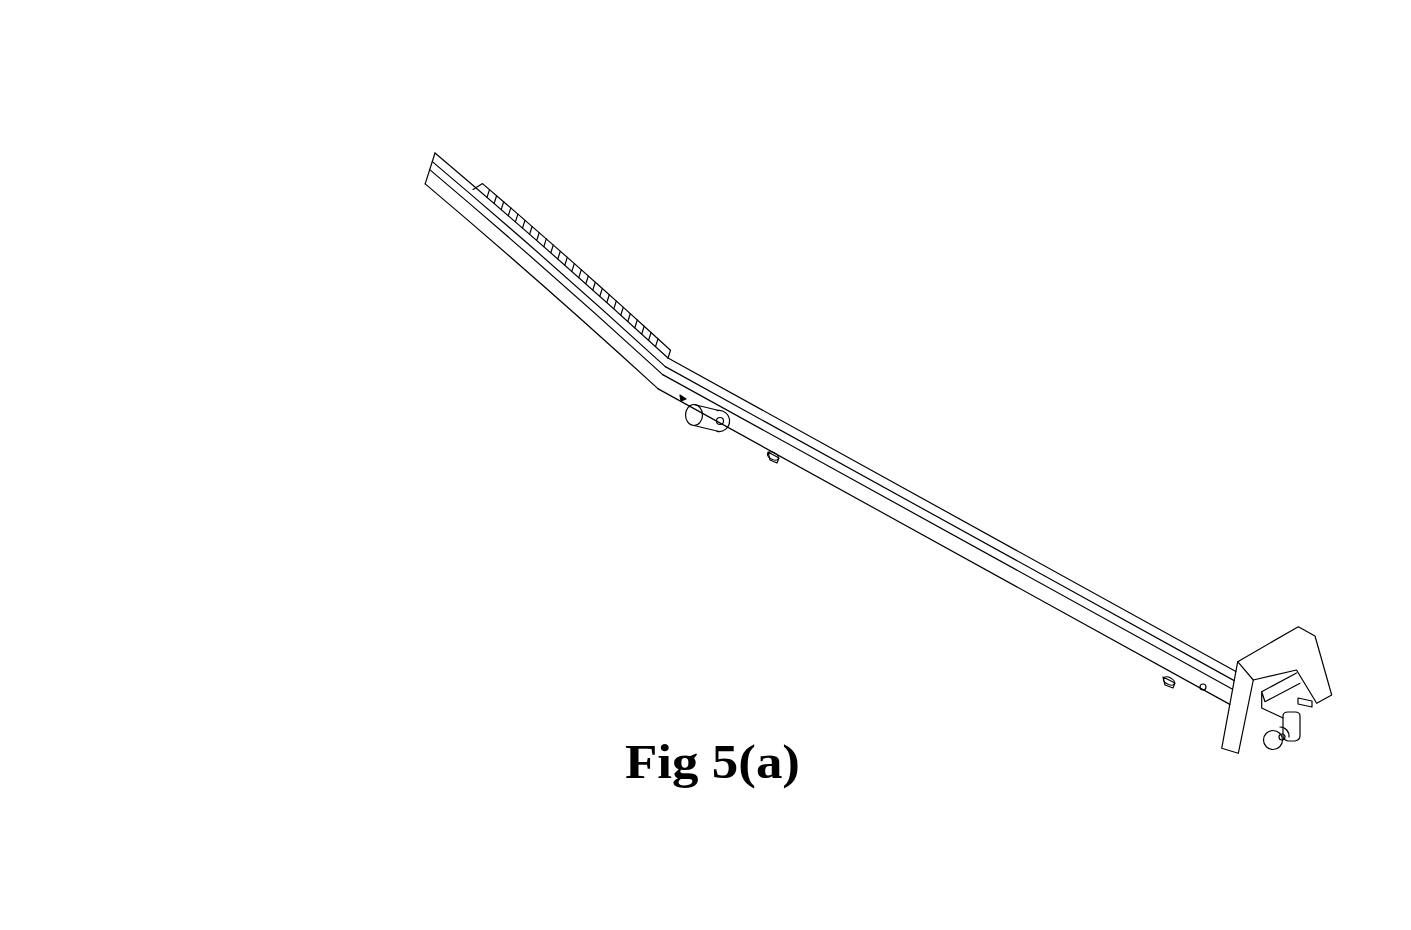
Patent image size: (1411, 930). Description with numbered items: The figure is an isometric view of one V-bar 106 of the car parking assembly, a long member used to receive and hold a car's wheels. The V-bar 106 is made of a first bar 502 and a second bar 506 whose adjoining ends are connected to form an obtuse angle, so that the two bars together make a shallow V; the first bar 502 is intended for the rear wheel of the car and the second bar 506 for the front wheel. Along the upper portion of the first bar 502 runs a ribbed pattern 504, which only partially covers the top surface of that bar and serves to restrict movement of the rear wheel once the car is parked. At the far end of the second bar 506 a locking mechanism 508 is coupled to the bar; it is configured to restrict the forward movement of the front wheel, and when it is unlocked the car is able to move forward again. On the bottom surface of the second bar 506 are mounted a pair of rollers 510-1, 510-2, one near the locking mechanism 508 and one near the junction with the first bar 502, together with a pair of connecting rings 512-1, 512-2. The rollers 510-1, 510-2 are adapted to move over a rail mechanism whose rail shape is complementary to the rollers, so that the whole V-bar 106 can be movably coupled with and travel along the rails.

The V-bar 106 is at (287, 119).
The first bar 502 is at (446, 143).
The ribbed pattern 504 is at (523, 210).
The second bar 506 is at (952, 503).
The locking mechanism 508 is at (1312, 625).
The roller 510-1 is at (1275, 766).
The roller 510-2 is at (699, 428).
The connecting ring 512-1 is at (775, 466).
The connecting ring 512-2 is at (1167, 694).